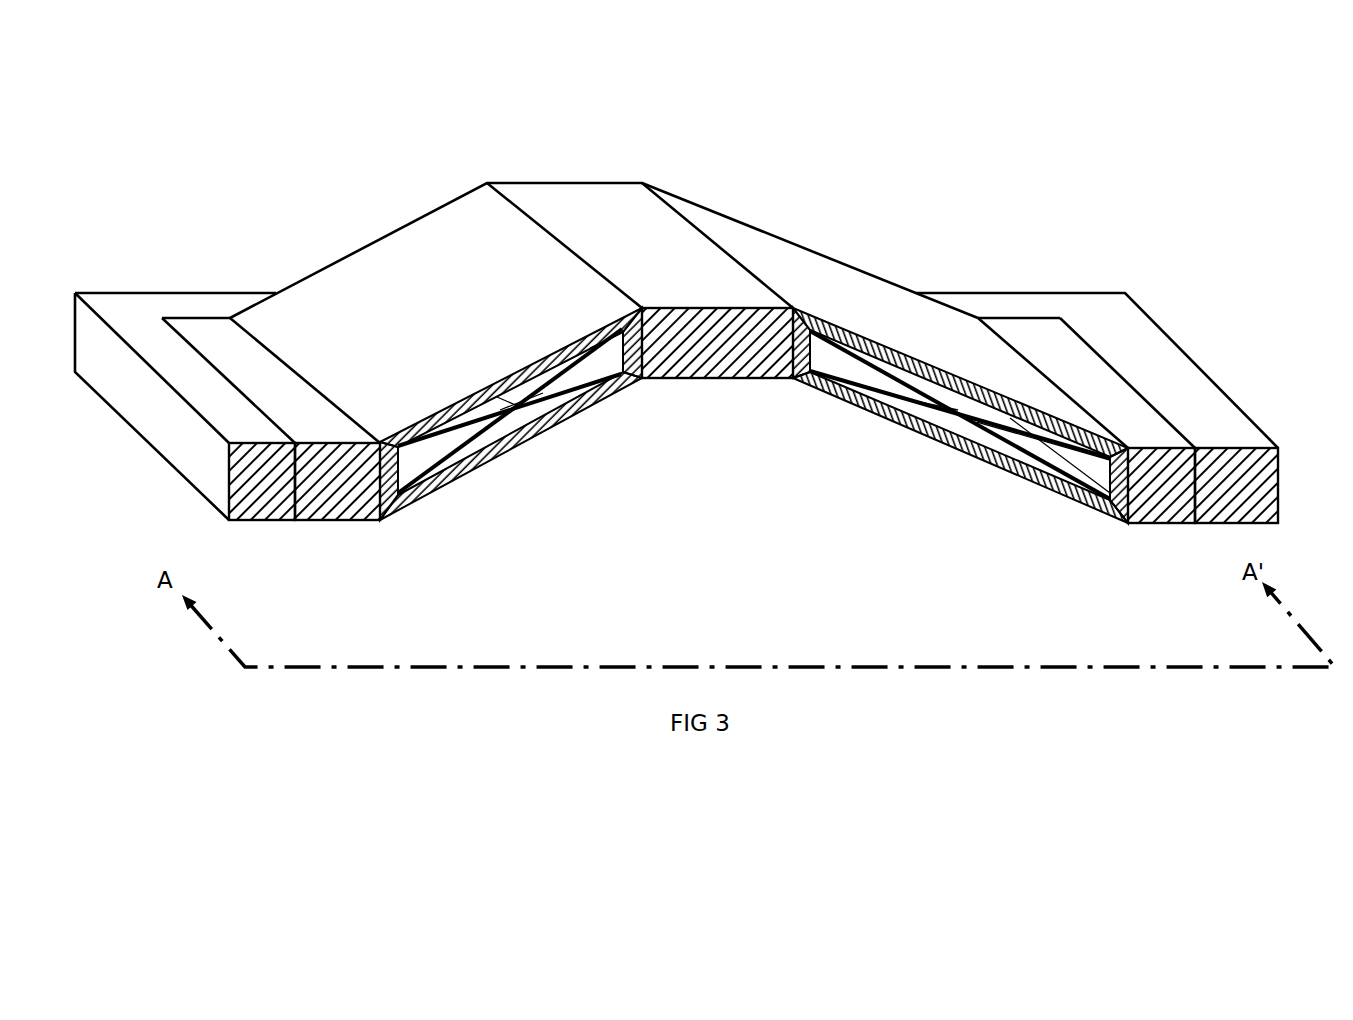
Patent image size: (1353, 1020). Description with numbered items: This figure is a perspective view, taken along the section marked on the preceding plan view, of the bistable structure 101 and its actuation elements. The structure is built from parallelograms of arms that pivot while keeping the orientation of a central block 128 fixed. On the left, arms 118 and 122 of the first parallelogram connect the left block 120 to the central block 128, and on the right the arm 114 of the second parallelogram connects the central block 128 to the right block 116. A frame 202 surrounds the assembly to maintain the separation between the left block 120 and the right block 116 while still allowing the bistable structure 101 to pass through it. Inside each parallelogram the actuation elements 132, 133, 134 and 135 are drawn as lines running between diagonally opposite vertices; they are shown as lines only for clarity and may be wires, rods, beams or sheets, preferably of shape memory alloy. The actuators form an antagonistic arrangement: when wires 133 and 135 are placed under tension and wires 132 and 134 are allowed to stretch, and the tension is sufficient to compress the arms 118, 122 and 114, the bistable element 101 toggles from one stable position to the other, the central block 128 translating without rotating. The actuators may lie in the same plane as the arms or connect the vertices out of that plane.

The bistable structure 101 is at (676, 271).
The arm 114 is at (903, 358).
The right block 116 is at (1173, 523).
The arm 118 is at (465, 398).
The left block 120 is at (331, 497).
The arm 122 is at (452, 474).
The central block 128 is at (725, 375).
The actuation element 132 is at (550, 398).
The actuation element 133 is at (590, 388).
The actuation element 134 is at (908, 402).
The actuation element 135 is at (990, 435).
The frame 202 is at (262, 505).